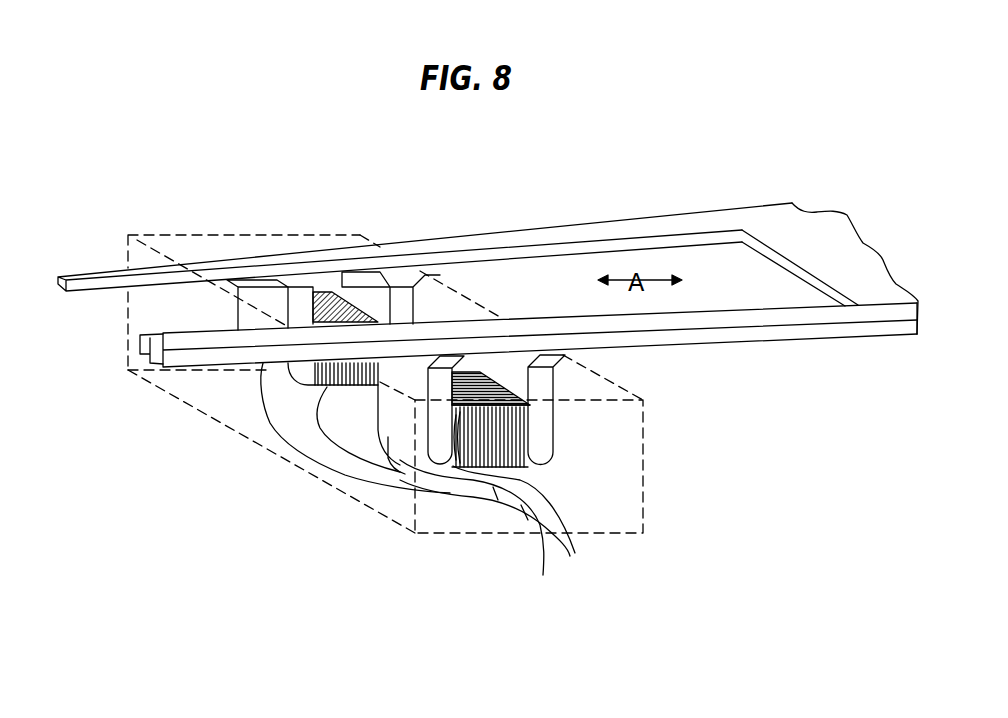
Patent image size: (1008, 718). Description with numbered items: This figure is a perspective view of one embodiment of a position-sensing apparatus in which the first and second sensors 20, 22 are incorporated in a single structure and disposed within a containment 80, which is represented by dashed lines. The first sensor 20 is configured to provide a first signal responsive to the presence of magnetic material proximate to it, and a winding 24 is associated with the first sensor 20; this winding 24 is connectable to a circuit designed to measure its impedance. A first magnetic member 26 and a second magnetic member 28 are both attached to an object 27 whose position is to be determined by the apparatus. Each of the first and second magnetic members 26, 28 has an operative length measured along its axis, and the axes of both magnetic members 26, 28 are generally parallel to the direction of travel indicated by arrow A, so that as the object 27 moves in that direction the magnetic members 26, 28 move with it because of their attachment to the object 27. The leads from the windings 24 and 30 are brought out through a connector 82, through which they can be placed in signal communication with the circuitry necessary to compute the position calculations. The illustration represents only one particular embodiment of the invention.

The first sensor 20 is at (540, 382).
The second sensor 22 is at (408, 305).
The winding 24 is at (385, 447).
The first magnetic member 26 is at (720, 339).
The object 27 is at (845, 248).
The second magnetic member 28 is at (540, 238).
The winding 30 is at (262, 385).
The containment 80 is at (643, 468).
The connector 82 is at (503, 513).